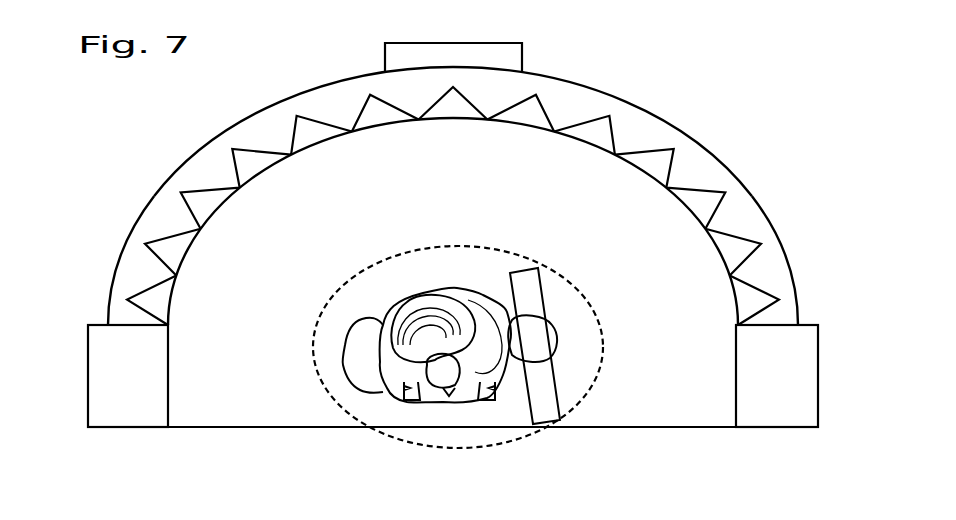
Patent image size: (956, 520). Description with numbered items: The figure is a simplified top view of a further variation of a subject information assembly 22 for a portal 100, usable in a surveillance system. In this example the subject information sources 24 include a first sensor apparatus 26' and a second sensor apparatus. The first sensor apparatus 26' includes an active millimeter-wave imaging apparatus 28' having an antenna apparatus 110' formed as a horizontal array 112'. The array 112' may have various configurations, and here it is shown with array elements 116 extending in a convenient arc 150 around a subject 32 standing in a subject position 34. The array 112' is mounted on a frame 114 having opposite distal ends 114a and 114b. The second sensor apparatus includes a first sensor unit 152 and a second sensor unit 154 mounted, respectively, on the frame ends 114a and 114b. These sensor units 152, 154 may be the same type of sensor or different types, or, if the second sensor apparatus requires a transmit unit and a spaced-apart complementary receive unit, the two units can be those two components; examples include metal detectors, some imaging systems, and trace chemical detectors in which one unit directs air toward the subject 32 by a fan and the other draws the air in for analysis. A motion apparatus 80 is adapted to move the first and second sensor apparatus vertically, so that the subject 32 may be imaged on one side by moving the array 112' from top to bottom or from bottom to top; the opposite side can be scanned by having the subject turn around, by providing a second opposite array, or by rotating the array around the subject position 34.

The subject information assembly 22 is at (716, 124).
The subject information sources 24 is at (121, 162).
The first sensor apparatus 26' is at (454, 177).
The active millimeter-wave imaging apparatus 28' is at (453, 221).
The subject 32 is at (437, 284).
The subject position 34 is at (463, 449).
The motion apparatus 80 is at (472, 42).
The portal 100 is at (712, 461).
The antenna apparatus 110' is at (453, 195).
The horizontal array 112' is at (453, 195).
The frame 114 is at (353, 76).
The first distal end of frame 114a is at (116, 270).
The second distal end of frame 114b is at (790, 270).
The array elements 116 is at (615, 130).
The arc 150 is at (436, 124).
The first sensor unit 152 is at (87, 395).
The second sensor unit 154 is at (819, 395).